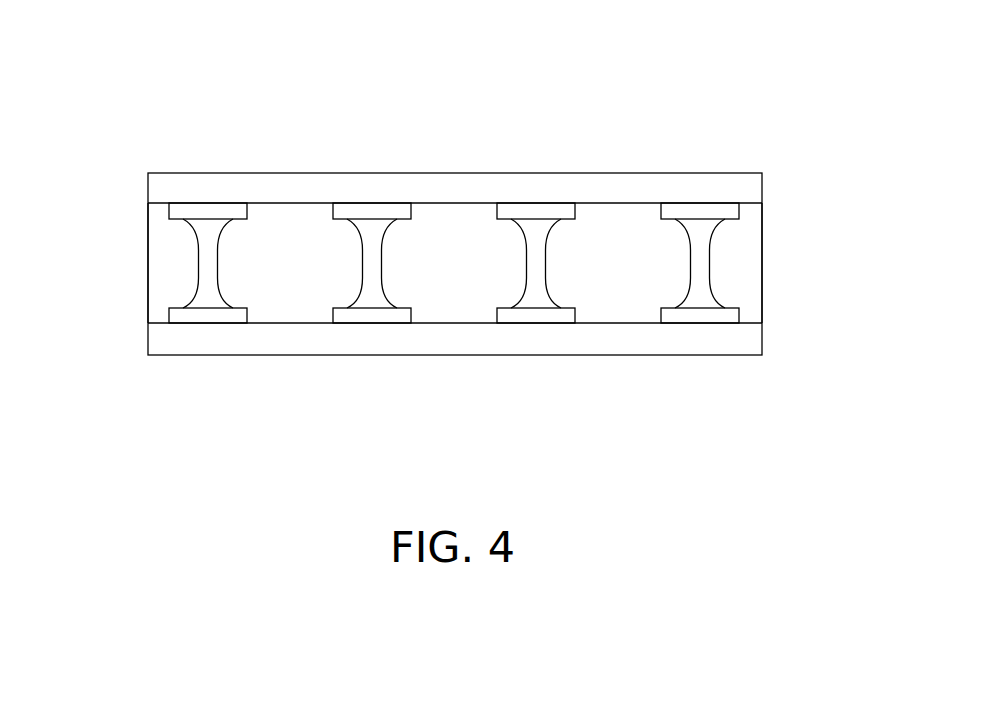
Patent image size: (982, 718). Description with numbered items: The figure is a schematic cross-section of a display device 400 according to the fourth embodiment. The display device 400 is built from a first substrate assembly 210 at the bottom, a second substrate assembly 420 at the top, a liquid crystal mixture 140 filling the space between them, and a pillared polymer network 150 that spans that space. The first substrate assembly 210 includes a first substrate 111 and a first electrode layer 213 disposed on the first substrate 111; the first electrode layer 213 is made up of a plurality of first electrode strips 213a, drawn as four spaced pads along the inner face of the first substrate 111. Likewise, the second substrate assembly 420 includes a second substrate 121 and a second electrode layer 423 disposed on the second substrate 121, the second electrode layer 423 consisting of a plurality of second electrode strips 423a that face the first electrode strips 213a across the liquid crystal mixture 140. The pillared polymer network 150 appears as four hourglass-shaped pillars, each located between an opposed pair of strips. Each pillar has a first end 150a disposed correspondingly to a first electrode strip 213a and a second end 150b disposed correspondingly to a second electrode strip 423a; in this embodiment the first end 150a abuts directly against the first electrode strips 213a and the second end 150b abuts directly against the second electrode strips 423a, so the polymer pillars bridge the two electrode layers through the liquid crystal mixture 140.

The display device 400 is at (88, 32).
The second substrate assembly 420 is at (738, 62).
The second electrode layer 423 is at (738, 118).
The second electrode strips 423a is at (208, 212).
The second substrate 121 is at (745, 187).
The liquid crystal mixture 140 is at (748, 263).
The pillared polymer network 150 is at (210, 258).
The second end 150b is at (207, 221).
The first end 150a is at (207, 307).
The first electrode strips 213a is at (207, 317).
The first electrode layer 213 is at (738, 412).
The first substrate 111 is at (743, 338).
The first substrate assembly 210 is at (833, 470).